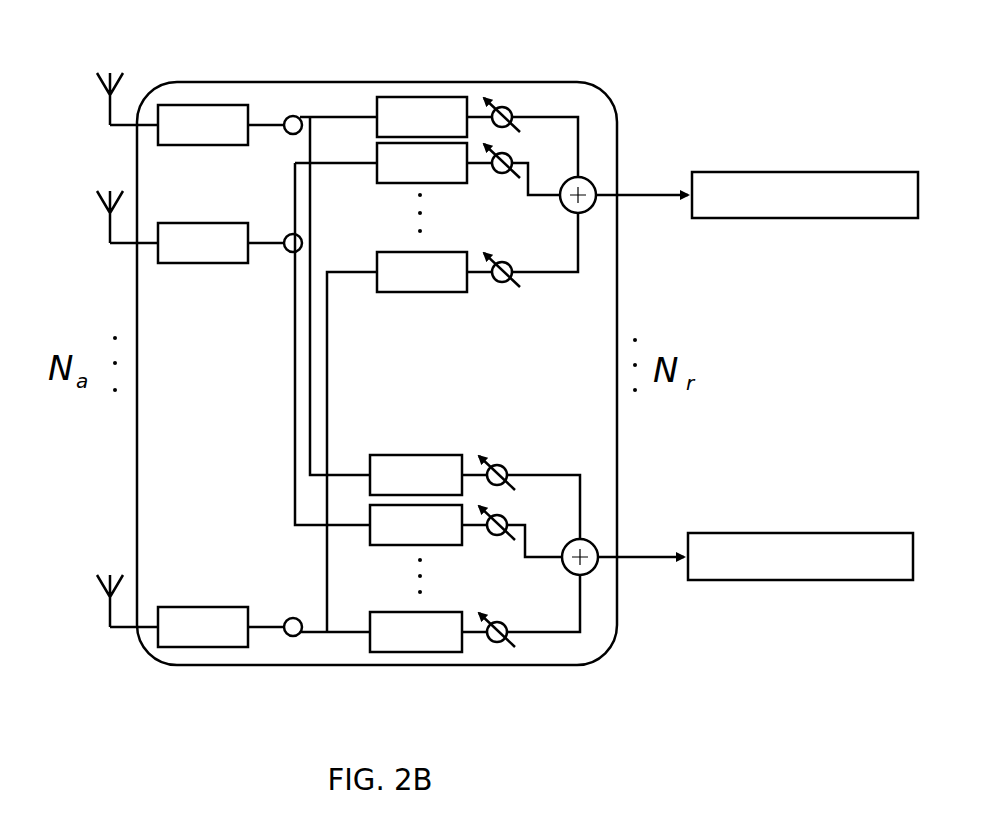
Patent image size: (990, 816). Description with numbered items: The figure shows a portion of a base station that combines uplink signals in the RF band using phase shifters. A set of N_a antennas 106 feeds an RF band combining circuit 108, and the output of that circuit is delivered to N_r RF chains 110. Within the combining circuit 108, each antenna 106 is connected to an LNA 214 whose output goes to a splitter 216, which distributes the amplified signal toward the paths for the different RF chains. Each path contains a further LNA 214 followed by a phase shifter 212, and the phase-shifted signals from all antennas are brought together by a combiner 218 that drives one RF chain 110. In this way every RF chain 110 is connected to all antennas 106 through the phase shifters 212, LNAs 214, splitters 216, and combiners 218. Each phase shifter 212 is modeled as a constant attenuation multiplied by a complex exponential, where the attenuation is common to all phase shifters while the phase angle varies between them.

The antennas 106 is at (97, 70).
The RF band combining circuit 108 is at (404, 81).
The RF chains 110 is at (895, 167).
The phase shifters 212 is at (512, 96).
The LNAs 214 is at (228, 99).
The splitters 216 is at (294, 112).
The combiners 218 is at (592, 173).